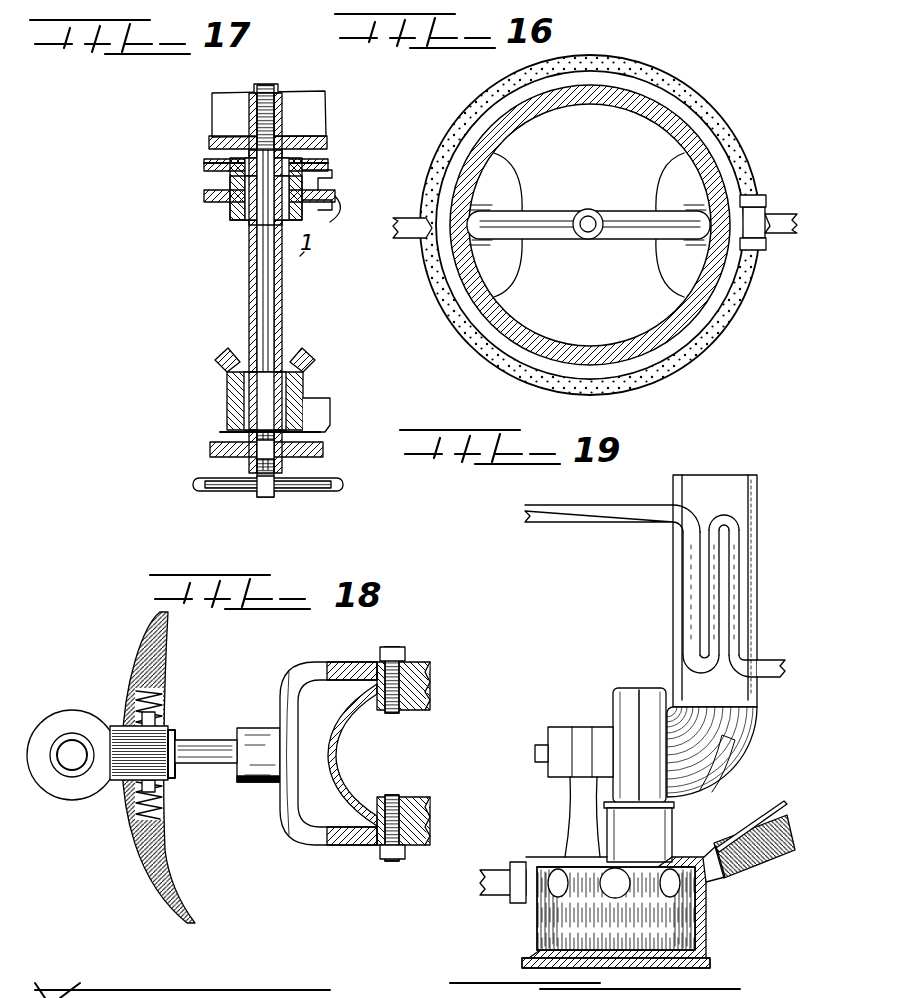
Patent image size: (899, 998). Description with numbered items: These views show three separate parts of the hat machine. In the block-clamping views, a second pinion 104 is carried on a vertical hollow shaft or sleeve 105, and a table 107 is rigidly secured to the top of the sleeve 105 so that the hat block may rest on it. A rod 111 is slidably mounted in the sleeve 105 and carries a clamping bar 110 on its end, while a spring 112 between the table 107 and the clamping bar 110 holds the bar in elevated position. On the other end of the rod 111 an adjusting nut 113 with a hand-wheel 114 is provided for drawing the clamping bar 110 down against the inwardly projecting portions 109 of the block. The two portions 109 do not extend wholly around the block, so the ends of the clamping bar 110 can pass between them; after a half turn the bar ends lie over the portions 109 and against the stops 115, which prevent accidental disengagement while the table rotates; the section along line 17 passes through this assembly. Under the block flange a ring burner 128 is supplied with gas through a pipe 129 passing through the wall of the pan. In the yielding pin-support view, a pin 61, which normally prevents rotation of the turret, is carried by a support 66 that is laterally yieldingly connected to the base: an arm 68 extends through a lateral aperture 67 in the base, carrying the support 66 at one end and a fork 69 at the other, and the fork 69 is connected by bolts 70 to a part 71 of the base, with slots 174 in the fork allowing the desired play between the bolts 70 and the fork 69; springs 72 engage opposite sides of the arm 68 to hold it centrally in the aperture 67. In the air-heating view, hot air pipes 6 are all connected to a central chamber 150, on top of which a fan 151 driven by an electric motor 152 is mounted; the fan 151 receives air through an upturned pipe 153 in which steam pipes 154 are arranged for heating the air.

In FIG. 17, the second pinion 104 is at (300, 384).
In FIG. 17, the vertical hollow shaft or sleeve 105 is at (278, 330).
In FIG. 17, the table 107 is at (325, 178).
In FIG. 16, the inwardly projecting portions 109 is at (512, 250).
In FIG. 17, the clamping bar 110 is at (290, 110).
In FIG. 16, the clamping bar 110 is at (508, 226).
In FIG. 17, the rod 111 is at (268, 268).
In FIG. 16, the rod 111 is at (592, 220).
In FIG. 17, the spring 112 is at (238, 165).
In FIG. 17, the adjusting nut 113 is at (295, 466).
In FIG. 17, the hand-wheel 114 is at (300, 486).
In FIG. 16, the stops 115 is at (492, 200).
In FIG. 16, the ring burner 128 is at (424, 226).
In FIG. 16, the pipe 129 is at (768, 214).
In FIG. 16, the section line 17— 17 is at (544, 214).
In FIG. 19, the central chamber 150 is at (706, 926).
In FIG. 19, the fan 151 is at (628, 700).
In FIG. 19, the electric motor 152 is at (548, 737).
In FIG. 19, the upturned pipe 153 is at (750, 598).
In FIG. 19, the steam pipes 154 is at (735, 560).
In FIG. 19, the hot air pipes 6 is at (758, 866).
In FIG. 18, the pin 61 is at (72, 758).
In FIG. 18, the support 66 is at (78, 718).
In FIG. 18, the lateral aperture 67 is at (128, 803).
In FIG. 18, the arm 68 is at (202, 745).
In FIG. 18, the fork 69 is at (292, 808).
In FIG. 18, the bolts 70 is at (388, 712).
In FIG. 18, the part of the base 71 is at (342, 778).
In FIG. 18, the springs 72 is at (158, 700).
In FIG. 18, the slots 174 is at (380, 848).